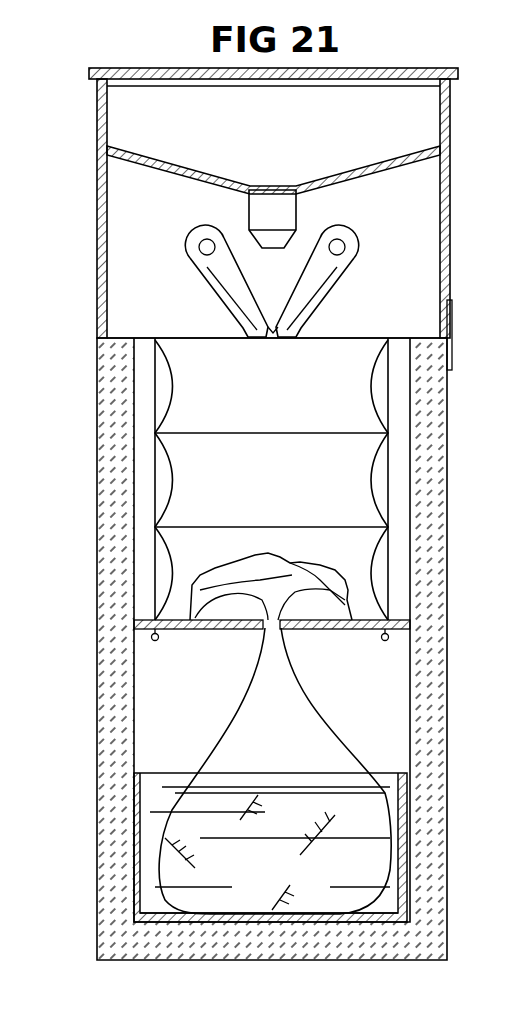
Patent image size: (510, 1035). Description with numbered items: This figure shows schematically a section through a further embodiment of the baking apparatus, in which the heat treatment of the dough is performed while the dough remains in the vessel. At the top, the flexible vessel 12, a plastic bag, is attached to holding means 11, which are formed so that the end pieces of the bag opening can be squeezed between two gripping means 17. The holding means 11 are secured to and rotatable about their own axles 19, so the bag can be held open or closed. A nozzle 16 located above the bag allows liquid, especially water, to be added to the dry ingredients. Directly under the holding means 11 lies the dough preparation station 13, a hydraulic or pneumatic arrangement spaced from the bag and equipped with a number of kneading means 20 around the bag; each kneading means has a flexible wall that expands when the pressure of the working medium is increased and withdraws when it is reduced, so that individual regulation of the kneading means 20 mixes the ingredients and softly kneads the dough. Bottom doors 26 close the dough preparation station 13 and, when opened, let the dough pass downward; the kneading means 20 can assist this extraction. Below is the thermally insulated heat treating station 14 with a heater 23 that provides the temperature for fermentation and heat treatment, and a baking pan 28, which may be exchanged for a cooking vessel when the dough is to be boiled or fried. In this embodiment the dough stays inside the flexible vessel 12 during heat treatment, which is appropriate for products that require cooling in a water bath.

The holding means 11 is at (182, 255).
The flexible vessel 12 is at (315, 753).
The dough preparation station 13 is at (152, 473).
The heat treating station 14 is at (126, 832).
The nozzle 16 is at (284, 220).
The gripping means 17 is at (228, 292).
The axles 19 is at (205, 246).
The kneading means 20 is at (380, 402).
The heater 23 is at (258, 924).
The bottom doors 26 is at (211, 629).
The baking pan 28 is at (402, 842).